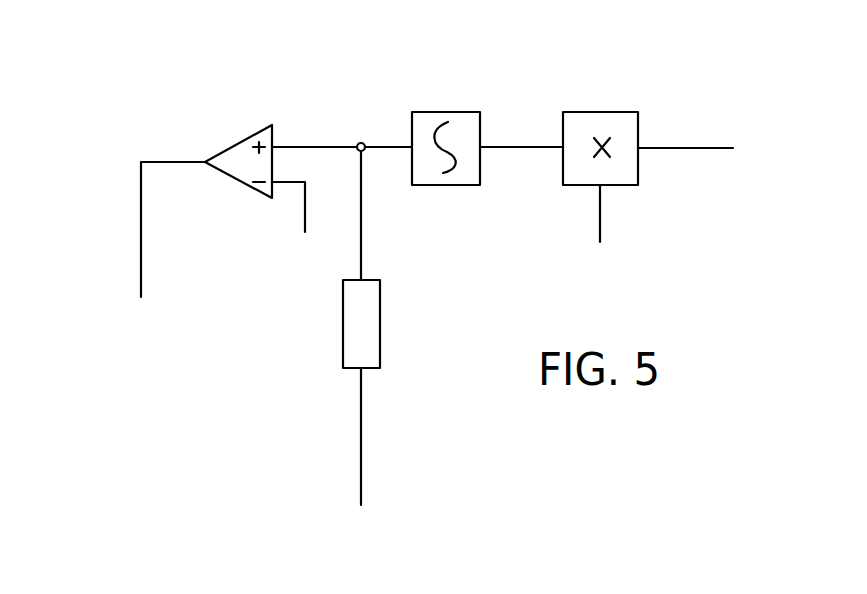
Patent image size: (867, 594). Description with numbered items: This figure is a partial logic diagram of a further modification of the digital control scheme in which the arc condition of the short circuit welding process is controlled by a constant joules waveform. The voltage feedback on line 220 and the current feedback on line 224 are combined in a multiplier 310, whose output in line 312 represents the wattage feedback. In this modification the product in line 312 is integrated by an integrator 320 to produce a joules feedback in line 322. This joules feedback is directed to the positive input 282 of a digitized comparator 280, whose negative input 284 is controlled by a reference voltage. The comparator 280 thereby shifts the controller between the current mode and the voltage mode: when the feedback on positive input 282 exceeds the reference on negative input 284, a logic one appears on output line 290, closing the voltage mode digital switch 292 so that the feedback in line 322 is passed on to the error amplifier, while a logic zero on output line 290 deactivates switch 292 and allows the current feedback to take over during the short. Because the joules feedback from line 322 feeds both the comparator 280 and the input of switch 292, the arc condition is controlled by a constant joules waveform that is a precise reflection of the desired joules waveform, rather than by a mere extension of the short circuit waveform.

The digitized comparator 280 is at (275, 130).
The positive input 282 is at (322, 147).
The negative input 284 is at (305, 212).
The output line 290 is at (140, 248).
The voltage mode digital switch 292 is at (343, 318).
The integrator 320 is at (462, 112).
The joules feedback line 322 is at (383, 149).
The wattage feedback line 312 is at (535, 147).
The multiplier 310 is at (603, 112).
The voltage feedback line 220 is at (682, 148).
The current feedback line 224 is at (600, 206).